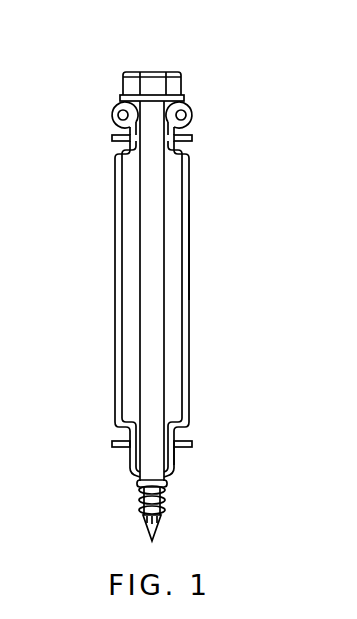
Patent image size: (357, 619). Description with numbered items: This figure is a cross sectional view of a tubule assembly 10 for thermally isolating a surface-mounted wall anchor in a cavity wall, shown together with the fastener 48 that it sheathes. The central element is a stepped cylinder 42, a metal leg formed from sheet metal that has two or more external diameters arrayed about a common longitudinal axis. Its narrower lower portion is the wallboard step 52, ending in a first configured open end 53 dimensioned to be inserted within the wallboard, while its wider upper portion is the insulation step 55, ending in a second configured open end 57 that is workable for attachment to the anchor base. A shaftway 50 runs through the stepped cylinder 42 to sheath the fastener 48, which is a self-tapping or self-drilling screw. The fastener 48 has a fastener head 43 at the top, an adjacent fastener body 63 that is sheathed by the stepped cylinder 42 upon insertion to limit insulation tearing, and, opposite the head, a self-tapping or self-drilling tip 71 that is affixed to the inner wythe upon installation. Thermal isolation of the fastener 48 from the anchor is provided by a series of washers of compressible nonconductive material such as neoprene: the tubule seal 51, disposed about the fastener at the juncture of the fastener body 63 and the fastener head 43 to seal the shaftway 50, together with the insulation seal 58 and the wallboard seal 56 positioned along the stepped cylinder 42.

The tubule assembly 10 is at (216, 366).
The stepped cylinder 42 is at (192, 253).
The fastener head 43 is at (152, 72).
The fastener 48 is at (155, 283).
The shaftway 50 is at (175, 223).
The tubule seal 51 is at (120, 97).
The wallboard step 52 is at (173, 452).
The first configured open end 53 is at (173, 460).
The insulation step 55 is at (192, 193).
The wallboard seal 56 is at (112, 443).
The second configured open end 57 is at (190, 113).
The insulation seal 58 is at (112, 136).
The fastener body 63 is at (150, 238).
The self-tapping or self-drilling tip 71 is at (164, 505).